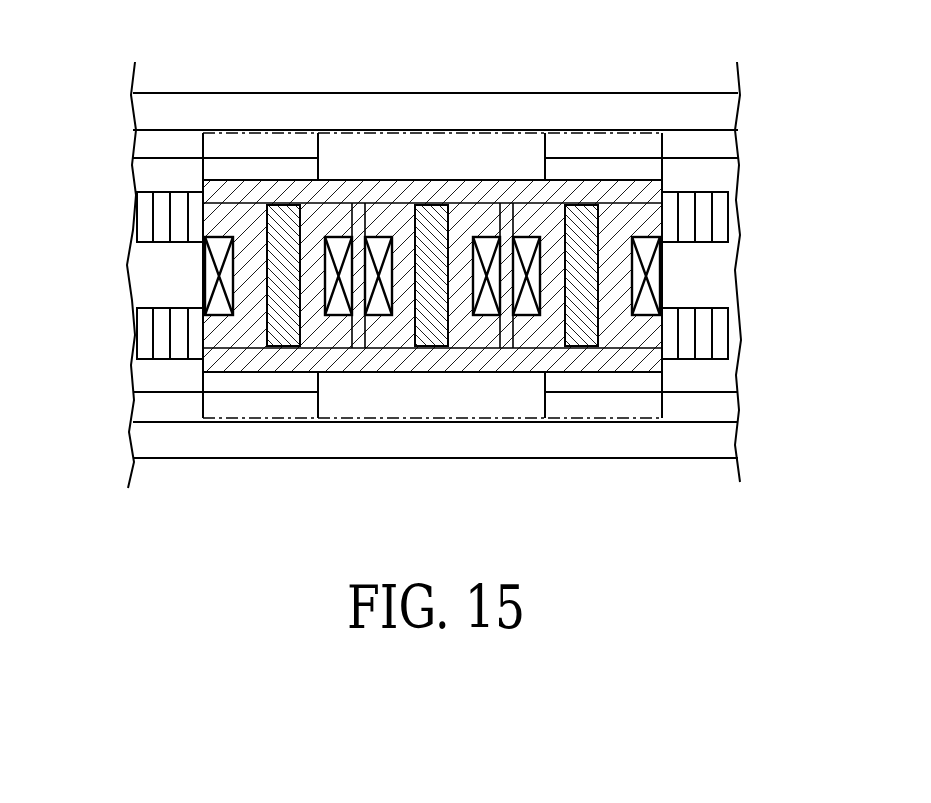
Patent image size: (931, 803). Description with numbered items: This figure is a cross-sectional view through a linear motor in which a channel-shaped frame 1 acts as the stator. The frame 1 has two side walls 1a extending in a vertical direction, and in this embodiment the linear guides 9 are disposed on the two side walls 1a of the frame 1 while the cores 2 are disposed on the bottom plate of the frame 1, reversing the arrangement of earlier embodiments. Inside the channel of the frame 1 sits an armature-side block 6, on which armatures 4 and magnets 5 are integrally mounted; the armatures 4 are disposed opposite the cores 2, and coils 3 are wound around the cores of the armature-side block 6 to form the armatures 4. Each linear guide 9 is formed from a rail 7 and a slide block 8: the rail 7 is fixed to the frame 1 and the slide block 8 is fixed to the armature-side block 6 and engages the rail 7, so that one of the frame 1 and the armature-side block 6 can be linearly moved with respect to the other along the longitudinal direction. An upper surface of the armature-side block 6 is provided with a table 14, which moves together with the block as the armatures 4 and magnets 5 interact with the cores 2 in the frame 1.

The frame 1 is at (163, 106).
The side wall 1a is at (720, 113).
The core 2 is at (161, 226).
The coil 3 is at (213, 277).
The armature 4 is at (381, 224).
The magnet 5 is at (578, 220).
The armature-side block 6 is at (632, 190).
The rail 7 is at (298, 146).
The slide block 8 is at (339, 147).
The linear guide 9 is at (432, 280).
The table 14 is at (243, 143).